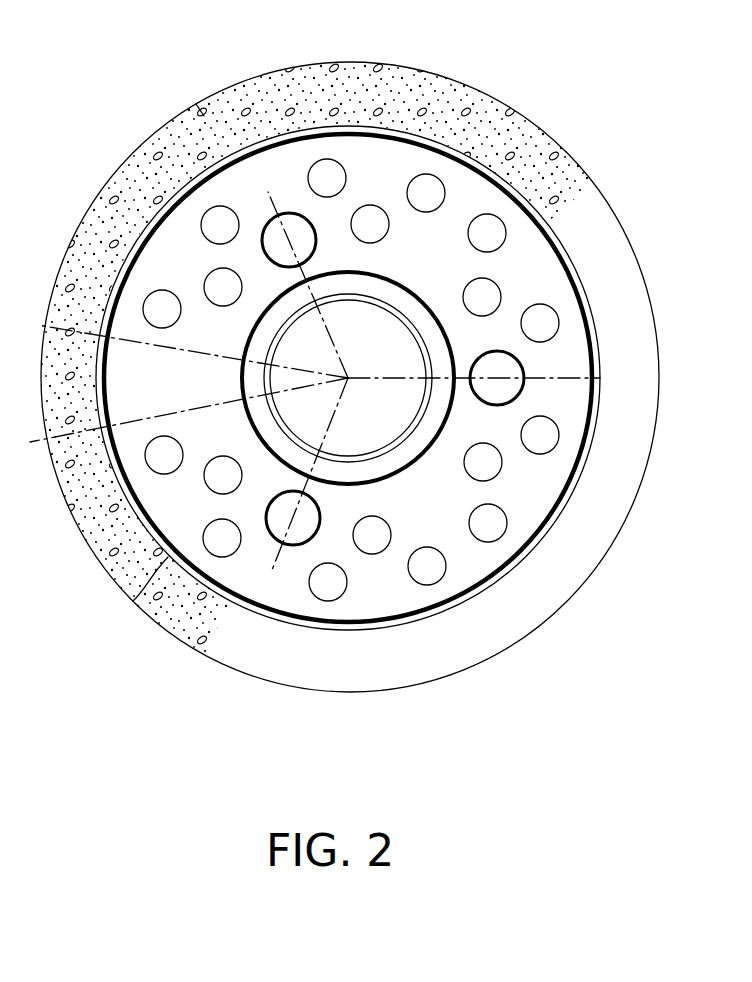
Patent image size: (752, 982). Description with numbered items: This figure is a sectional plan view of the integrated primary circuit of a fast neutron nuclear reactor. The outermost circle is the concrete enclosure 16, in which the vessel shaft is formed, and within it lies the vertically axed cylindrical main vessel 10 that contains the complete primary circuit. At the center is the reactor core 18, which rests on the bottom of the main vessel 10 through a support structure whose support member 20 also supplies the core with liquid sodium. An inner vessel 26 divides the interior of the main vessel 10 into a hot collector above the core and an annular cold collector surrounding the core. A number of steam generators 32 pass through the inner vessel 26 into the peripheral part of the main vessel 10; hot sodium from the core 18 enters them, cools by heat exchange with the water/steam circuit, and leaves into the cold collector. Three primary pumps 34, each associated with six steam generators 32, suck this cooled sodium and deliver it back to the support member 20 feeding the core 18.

The main vessel 10 is at (140, 597).
The concrete enclosure 16 is at (381, 72).
The reactor core 18 is at (386, 425).
The support member 20 is at (408, 445).
The inner vessel 26 is at (233, 373).
The steam generators 32 is at (207, 280).
The primary pumps 34 is at (284, 214).